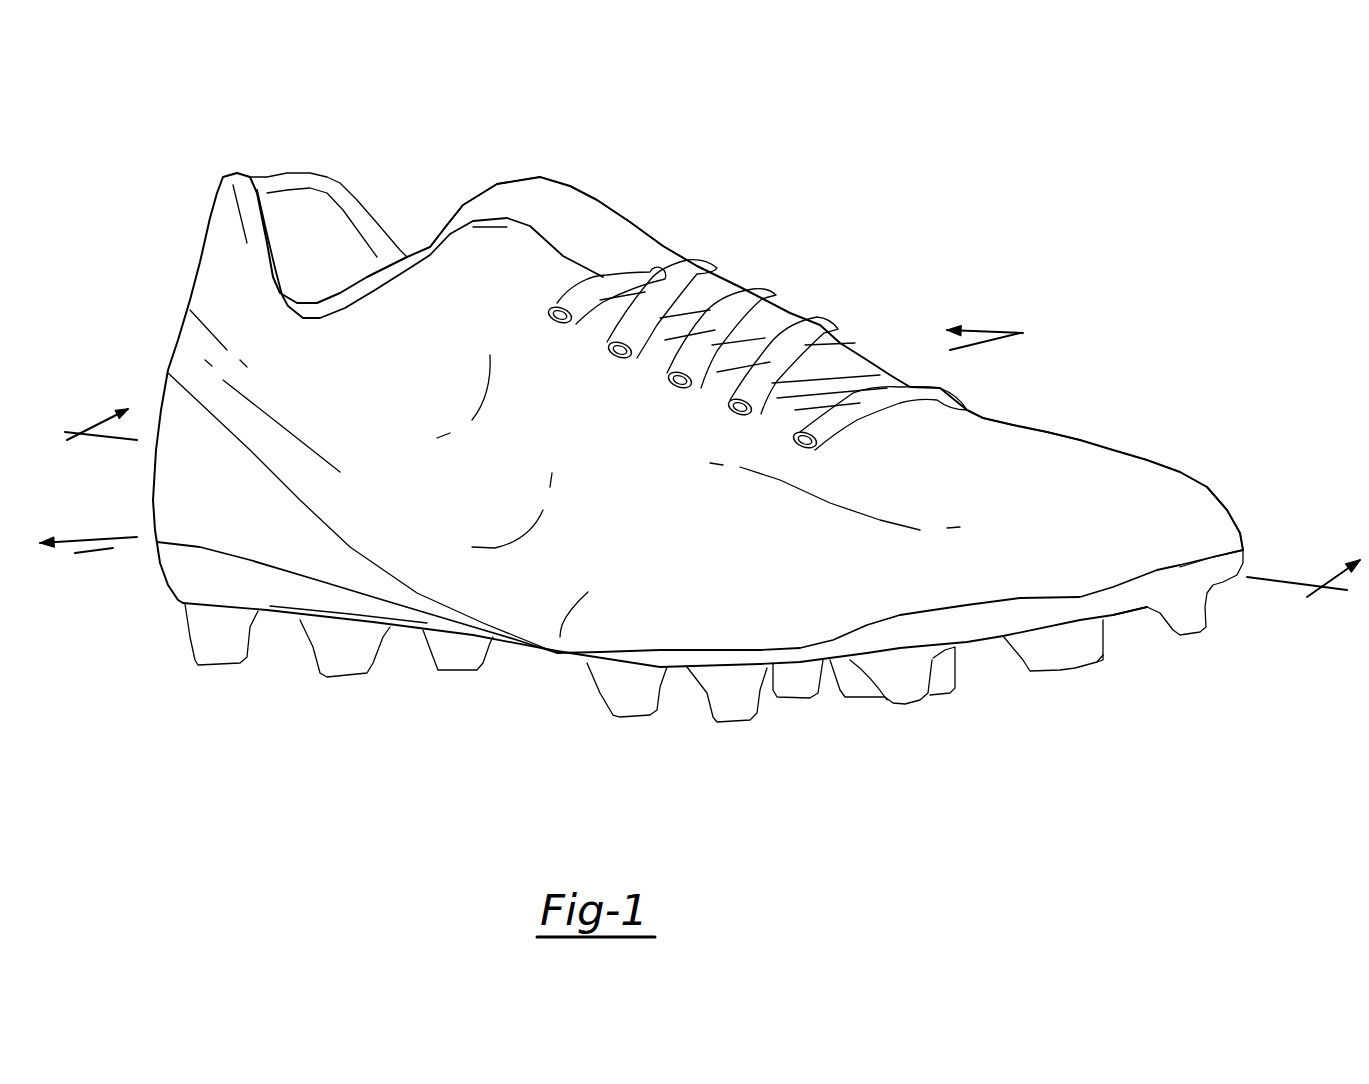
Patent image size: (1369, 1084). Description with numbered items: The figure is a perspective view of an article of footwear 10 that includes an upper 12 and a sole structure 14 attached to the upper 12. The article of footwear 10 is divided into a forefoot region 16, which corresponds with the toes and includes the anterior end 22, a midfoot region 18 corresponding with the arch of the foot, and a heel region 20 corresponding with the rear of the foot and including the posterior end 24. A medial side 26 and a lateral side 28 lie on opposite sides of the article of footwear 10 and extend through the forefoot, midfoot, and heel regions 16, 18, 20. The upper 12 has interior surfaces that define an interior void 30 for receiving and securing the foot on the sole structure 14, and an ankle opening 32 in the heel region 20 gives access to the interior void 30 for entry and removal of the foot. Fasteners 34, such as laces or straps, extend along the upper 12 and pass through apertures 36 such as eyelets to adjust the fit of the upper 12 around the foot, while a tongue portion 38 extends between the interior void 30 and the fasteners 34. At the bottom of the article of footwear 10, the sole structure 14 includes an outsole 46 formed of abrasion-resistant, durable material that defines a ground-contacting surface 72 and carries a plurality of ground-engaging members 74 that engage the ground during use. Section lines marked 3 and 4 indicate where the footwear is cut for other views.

The article of footwear 10 is at (973, 123).
The upper 12 is at (891, 258).
The sole structure 14 is at (775, 738).
The forefoot region 16 is at (978, 643).
The midfoot region 18 is at (527, 650).
The heel region 20 is at (283, 616).
The anterior end 22 is at (1223, 503).
The posterior end 24 is at (152, 497).
The medial side 26 is at (1057, 430).
The lateral side 28 is at (560, 640).
The interior void 30 is at (327, 232).
The ankle opening 32 is at (280, 175).
The fasteners 34 is at (673, 270).
The apertures 36 is at (573, 323).
The tongue portion 38 is at (597, 196).
The outsole 46 is at (677, 665).
The ground-contacting surface 72 is at (1123, 618).
The ground-engaging members 74 is at (1050, 670).
The section line 3- 3 is at (697, 521).
The section line 4- 4 is at (542, 449).